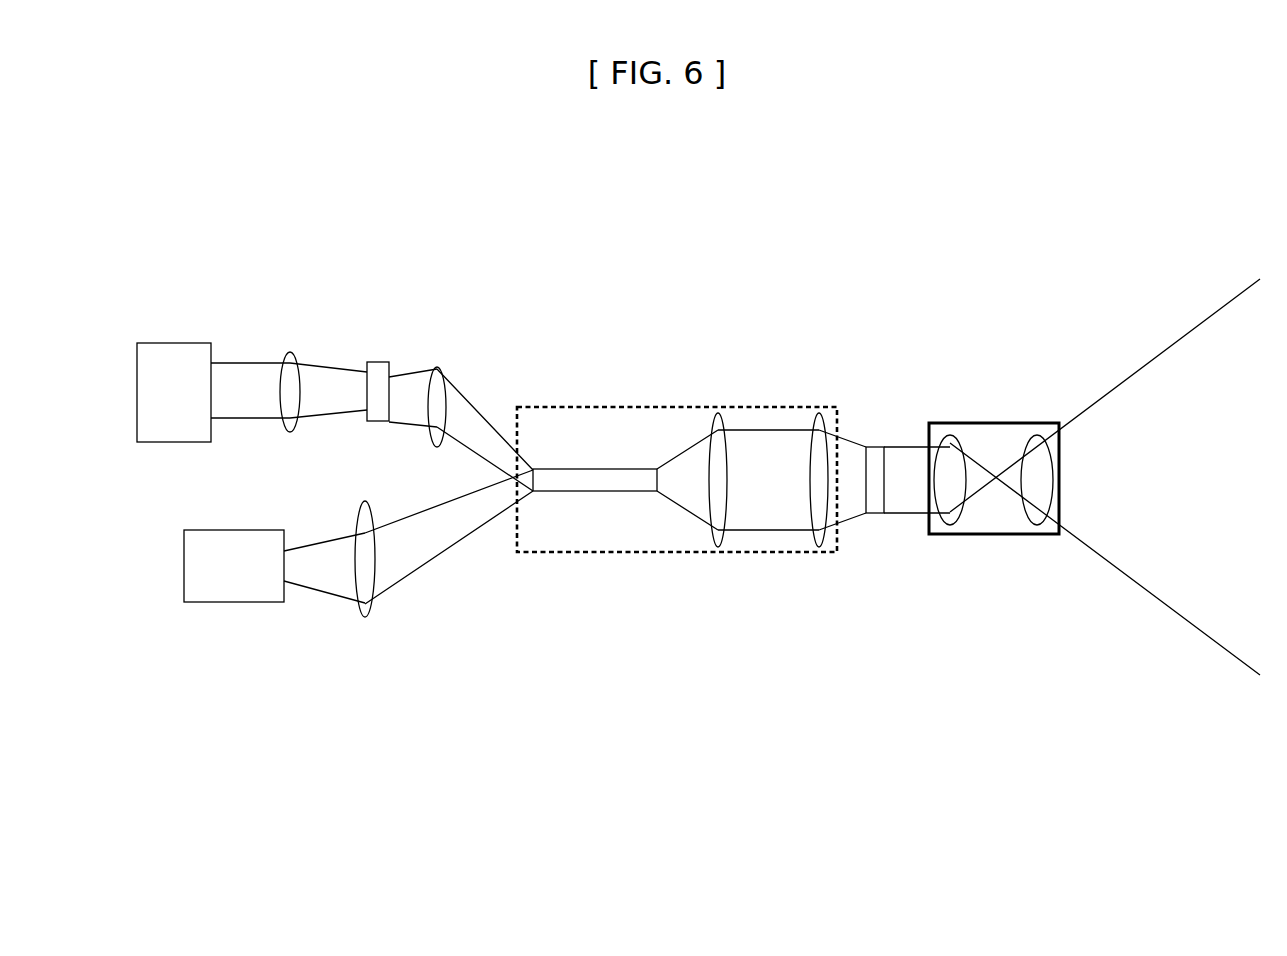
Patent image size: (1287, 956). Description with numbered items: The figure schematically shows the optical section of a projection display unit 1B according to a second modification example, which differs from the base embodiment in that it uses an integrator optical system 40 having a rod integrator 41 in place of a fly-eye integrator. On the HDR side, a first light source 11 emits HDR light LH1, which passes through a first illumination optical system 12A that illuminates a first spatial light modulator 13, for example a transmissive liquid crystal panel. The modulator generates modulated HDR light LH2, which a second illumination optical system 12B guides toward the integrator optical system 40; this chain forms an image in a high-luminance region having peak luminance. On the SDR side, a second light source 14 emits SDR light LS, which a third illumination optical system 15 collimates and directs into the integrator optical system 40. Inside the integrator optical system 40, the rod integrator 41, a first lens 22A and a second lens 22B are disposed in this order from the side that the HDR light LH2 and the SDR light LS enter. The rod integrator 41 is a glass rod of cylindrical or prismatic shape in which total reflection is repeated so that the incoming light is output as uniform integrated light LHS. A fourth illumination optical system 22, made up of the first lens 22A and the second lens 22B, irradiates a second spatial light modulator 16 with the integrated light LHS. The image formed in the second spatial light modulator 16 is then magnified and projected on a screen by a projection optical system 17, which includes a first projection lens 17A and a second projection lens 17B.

The projection display unit 1B is at (922, 203).
The first light source 11 is at (172, 352).
The first illumination optical system 12A is at (288, 350).
The second illumination optical system 12B is at (440, 372).
The first spatial light modulator 13 is at (379, 370).
The second light source 14 is at (236, 595).
The third illumination optical system 15 is at (368, 606).
The second spatial light modulator 16 is at (875, 445).
The projection optical system 17 is at (1005, 533).
The first projection lens 17A is at (952, 435).
The second projection lens 17B is at (1033, 435).
The fourth illumination optical system 22 is at (847, 634).
The first lens 22A is at (718, 548).
The second lens 22B is at (818, 548).
The integrator optical system 40 is at (577, 555).
The rod integrator 41 is at (593, 466).
The HDR light LH1 is at (247, 417).
The HDR light LH2 is at (417, 418).
The SDR light LS is at (307, 585).
The integrated light LHS is at (780, 528).